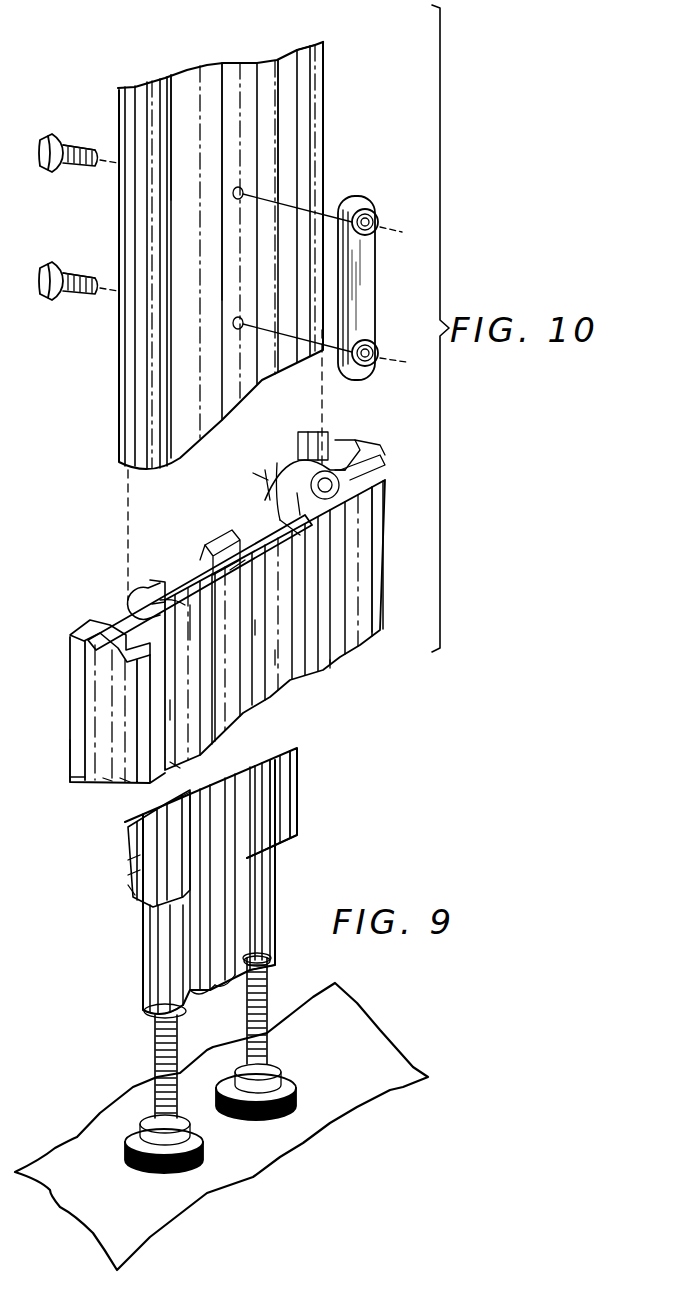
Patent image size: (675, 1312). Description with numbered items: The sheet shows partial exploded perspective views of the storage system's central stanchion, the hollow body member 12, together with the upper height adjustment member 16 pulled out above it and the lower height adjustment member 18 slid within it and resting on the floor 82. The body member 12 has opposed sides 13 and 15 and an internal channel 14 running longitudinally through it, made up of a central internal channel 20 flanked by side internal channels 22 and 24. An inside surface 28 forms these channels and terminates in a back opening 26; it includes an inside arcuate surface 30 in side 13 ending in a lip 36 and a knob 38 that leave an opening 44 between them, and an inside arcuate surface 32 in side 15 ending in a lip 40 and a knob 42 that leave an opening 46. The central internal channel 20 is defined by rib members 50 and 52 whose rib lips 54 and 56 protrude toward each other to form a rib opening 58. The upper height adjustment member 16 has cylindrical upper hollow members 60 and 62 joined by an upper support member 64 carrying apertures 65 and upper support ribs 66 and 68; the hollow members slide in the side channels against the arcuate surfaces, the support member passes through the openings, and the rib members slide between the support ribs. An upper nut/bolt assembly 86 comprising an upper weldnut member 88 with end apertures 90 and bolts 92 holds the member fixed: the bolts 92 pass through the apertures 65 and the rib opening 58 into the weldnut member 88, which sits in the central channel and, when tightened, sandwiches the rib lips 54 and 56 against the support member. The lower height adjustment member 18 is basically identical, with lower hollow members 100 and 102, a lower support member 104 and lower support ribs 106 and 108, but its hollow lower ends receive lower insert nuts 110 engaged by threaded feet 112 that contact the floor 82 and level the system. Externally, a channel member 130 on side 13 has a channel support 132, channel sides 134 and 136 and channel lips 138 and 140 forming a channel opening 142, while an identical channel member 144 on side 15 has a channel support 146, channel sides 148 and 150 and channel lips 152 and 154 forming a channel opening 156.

In FIG. 10, the hollow body member 12 is at (237, 690).
In FIG. 10, the side 13 is at (177, 763).
In FIG. 9, the side 13 is at (277, 780).
In FIG. 10, the internal channel 14 is at (196, 578).
In FIG. 10, the side 15 is at (330, 666).
In FIG. 9, the side 15 is at (140, 918).
In FIG. 10, the upper height adjustment member 16 is at (341, 133).
In FIG. 9, the lower height adjustment member 18 is at (291, 900).
In FIG. 10, the central internal channel 20 is at (290, 530).
In FIG. 10, the side internal channel 22 is at (133, 590).
In FIG. 10, the side internal channel 24 is at (345, 470).
In FIG. 10, the back opening 26 is at (212, 540).
In FIG. 10, the inside surface 28 is at (173, 587).
In FIG. 10, the inside arcuate surface 30 is at (110, 630).
In FIG. 10, the inside arcuate surface 32 is at (332, 490).
In FIG. 10, the lip 36 is at (157, 587).
In FIG. 10, the knob 38 is at (193, 643).
In FIG. 10, the lip 40 is at (270, 480).
In FIG. 10, the knob 42 is at (333, 503).
In FIG. 10, the opening 44 is at (170, 700).
In FIG. 10, the opening 46 is at (277, 463).
In FIG. 10, the rib member 50 is at (232, 531).
In FIG. 10, the rib member 52 is at (280, 660).
In FIG. 10, the rib lip 54 is at (253, 473).
In FIG. 10, the rib lip 56 is at (260, 627).
In FIG. 10, the rib opening 58 is at (237, 570).
In FIG. 10, the upper hollow member 60 is at (124, 398).
In FIG. 10, the upper hollow member 62 is at (312, 255).
In FIG. 10, the upper support member 64 is at (190, 133).
In FIG. 10, the apertures 65 is at (238, 186).
In FIG. 10, the upper support rib 66 is at (220, 292).
In FIG. 10, the upper support rib 68 is at (272, 165).
In FIG. 9, the floor 82 is at (240, 1139).
In FIG. 10, the upper nut/bolt assembly 86 is at (66, 118).
In FIG. 10, the upper weldnut member 88 is at (368, 305).
In FIG. 10, the end apertures 90 is at (373, 222).
In FIG. 10, the bolts 92 is at (68, 173).
In FIG. 9, the lower hollow member 100 is at (275, 935).
In FIG. 9, the lower hollow member 102 is at (140, 1010).
In FIG. 9, the lower support member 104 is at (188, 996).
In FIG. 9, the lower support rib 106 is at (268, 988).
In FIG. 9, the lower support rib 108 is at (223, 983).
In FIG. 9, the lower insert nuts 110 is at (283, 962).
In FIG. 9, the threaded feet 112 is at (280, 1032).
In FIG. 9, the external channel member 130 is at (304, 809).
In FIG. 10, the channel support 132 is at (103, 783).
In FIG. 9, the channel side 134 is at (160, 830).
In FIG. 10, the channel side 136 is at (80, 622).
In FIG. 10, the channel lip 138 is at (123, 780).
In FIG. 10, the channel lip 140 is at (73, 777).
In FIG. 10, the channel opening 142 is at (72, 740).
In FIG. 10, the external channel member 144 is at (382, 580).
In FIG. 9, the external channel member 144 is at (123, 890).
In FIG. 10, the channel support 146 is at (350, 450).
In FIG. 10, the channel side 148 is at (312, 430).
In FIG. 10, the channel side 150 is at (372, 455).
In FIG. 10, the channel lip 152 is at (327, 440).
In FIG. 9, the channel lip 152 is at (127, 880).
In FIG. 10, the channel lip 154 is at (297, 495).
In FIG. 9, the channel lip 154 is at (130, 863).
In FIG. 10, the channel opening 156 is at (347, 440).